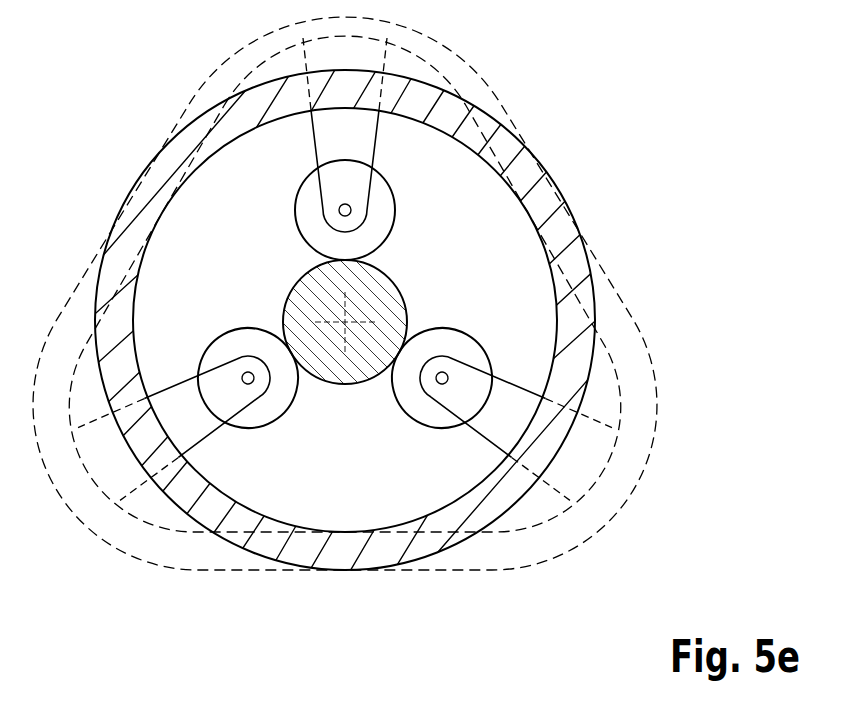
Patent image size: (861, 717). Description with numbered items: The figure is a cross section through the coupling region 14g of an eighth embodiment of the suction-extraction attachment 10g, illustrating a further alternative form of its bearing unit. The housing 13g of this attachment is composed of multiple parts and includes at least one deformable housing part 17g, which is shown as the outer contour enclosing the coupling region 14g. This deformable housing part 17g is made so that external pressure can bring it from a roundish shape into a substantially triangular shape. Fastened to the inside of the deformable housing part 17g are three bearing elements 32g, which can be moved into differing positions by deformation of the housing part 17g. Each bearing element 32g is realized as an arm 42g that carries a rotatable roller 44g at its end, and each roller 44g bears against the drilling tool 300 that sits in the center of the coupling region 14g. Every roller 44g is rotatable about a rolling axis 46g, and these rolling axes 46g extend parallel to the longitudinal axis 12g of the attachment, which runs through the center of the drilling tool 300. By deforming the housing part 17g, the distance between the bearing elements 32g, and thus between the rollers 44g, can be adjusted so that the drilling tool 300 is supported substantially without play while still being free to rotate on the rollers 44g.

The suction-extraction attachment 10g is at (153, 82).
The deformable housing part 17g is at (471, 72).
The housing 13g is at (555, 192).
The coupling region 14g is at (489, 270).
The longitudinal axis 12g is at (330, 346).
The drilling tool 300 is at (365, 371).
The arm 42g is at (335, 145).
The bearing element 32g is at (355, 145).
The roller 44g is at (305, 212).
The rolling axis 46g is at (355, 210).